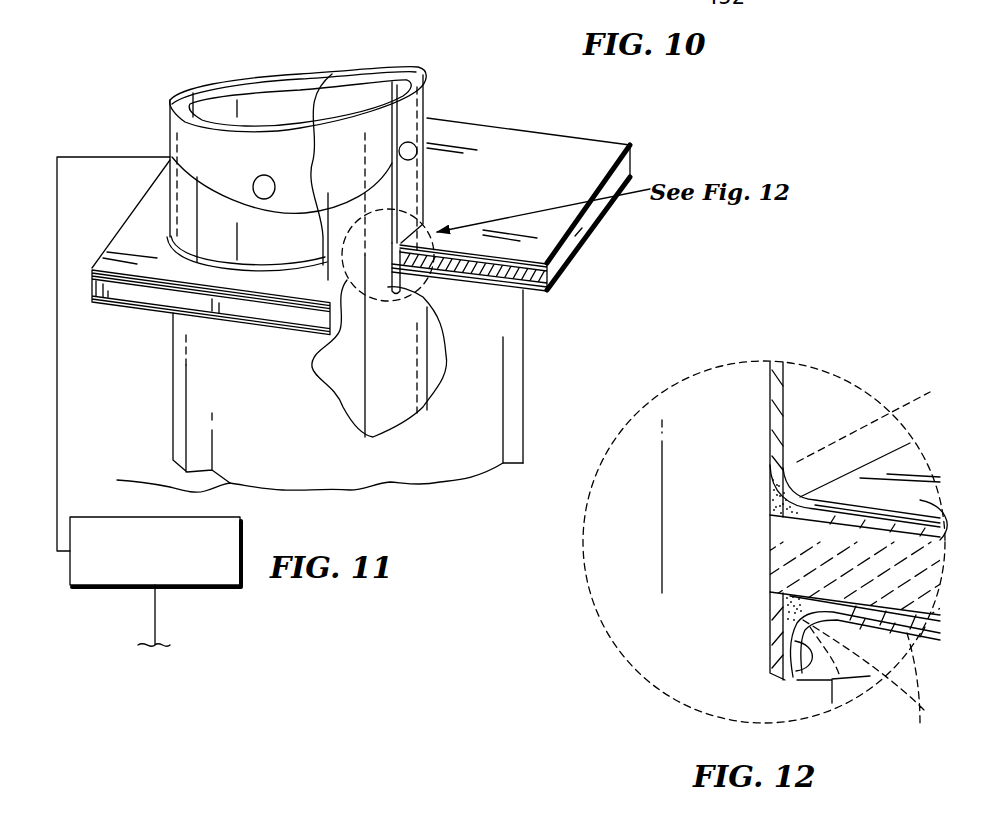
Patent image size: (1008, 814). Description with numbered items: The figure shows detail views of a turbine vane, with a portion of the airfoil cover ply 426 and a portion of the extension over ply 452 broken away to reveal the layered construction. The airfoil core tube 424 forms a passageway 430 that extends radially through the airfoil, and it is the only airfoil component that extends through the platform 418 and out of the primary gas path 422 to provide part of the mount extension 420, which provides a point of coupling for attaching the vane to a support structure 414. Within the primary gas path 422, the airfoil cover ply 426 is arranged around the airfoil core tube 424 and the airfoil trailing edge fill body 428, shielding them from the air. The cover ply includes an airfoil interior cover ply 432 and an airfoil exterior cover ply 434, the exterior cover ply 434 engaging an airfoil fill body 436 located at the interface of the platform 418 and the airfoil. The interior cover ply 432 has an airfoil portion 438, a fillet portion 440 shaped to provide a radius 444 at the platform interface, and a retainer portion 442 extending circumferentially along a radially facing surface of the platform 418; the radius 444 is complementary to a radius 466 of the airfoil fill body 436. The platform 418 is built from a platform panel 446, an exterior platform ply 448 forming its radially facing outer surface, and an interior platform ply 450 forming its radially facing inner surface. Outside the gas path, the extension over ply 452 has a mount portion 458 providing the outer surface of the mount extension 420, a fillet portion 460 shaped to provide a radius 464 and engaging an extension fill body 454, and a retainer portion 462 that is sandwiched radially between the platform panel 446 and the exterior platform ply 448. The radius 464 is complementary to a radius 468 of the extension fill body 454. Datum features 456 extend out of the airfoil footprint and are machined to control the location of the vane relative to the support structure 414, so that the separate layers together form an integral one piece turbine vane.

In FIG. 11, the support structure 414 is at (107, 586).
In FIG. 11, the platform 418 is at (89, 263).
In FIG. 11, the mount extension 420 is at (168, 76).
In FIG. 11, the primary gas path 422 is at (138, 353).
In FIG. 11, the airfoil core tube 424 is at (332, 74).
In FIG. 12, the airfoil core tube 424 is at (722, 372).
In FIG. 11, the airfoil cover ply 426 is at (144, 446).
In FIG. 12, the airfoil trailing edge fill body 428 is at (850, 684).
In FIG. 11, the passageway 430 is at (267, 104).
In FIG. 11, the airfoil interior cover ply 432 is at (317, 377).
In FIG. 12, the airfoil interior cover ply 432 is at (770, 633).
In FIG. 11, the airfoil exterior cover ply 434 is at (443, 367).
In FIG. 12, the airfoil exterior cover ply 434 is at (950, 713).
In FIG. 12, the airfoil fill body 436 is at (770, 597).
In FIG. 12, the airfoil portion 438 is at (792, 680).
In FIG. 12, the fillet portion 440 is at (876, 684).
In FIG. 12, the retainer portion 442 is at (877, 612).
In FIG. 12, the radius 444 is at (790, 682).
In FIG. 11, the platform panel 446 is at (560, 273).
In FIG. 12, the platform panel 446 is at (887, 613).
In FIG. 11, the exterior platform ply 448 is at (545, 228).
In FIG. 12, the exterior platform ply 448 is at (893, 587).
In FIG. 11, the interior platform ply 450 is at (537, 291).
In FIG. 12, the interior platform ply 450 is at (893, 638).
In FIG. 11, the extension over ply of reinforcement material 452 is at (396, 128).
In FIG. 12, the extension over ply of reinforcement material 452 is at (942, 395).
In FIG. 12, the extension fill body 454 is at (770, 497).
In FIG. 11, the datum features 456 is at (253, 183).
In FIG. 12, the mount portion 458 is at (783, 402).
In FIG. 12, the fillet portion 460 is at (857, 460).
In FIG. 12, the retainer portion 462 is at (885, 498).
In FIG. 12, the radius 464 is at (793, 492).
In FIG. 12, the radius 466 is at (773, 605).
In FIG. 12, the radius 468 is at (780, 510).